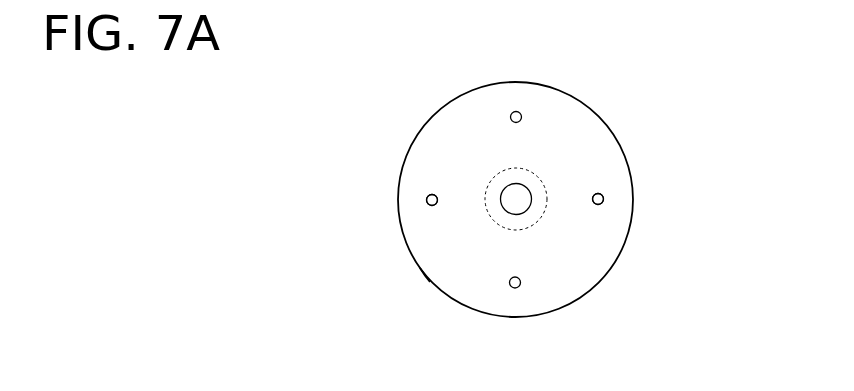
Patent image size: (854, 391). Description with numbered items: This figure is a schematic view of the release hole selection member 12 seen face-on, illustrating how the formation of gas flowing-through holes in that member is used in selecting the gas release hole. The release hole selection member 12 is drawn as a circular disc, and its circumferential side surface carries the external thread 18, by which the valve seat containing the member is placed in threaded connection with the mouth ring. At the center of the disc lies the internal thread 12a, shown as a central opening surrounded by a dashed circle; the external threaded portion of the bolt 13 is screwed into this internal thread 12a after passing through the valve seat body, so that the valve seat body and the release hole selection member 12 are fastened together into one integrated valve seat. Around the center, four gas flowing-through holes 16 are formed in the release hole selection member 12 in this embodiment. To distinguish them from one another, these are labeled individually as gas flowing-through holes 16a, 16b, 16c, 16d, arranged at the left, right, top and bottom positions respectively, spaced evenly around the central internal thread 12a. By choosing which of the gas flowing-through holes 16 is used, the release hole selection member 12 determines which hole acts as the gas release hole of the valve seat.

The release hole selection member 12 is at (637, 130).
The internal thread 12a is at (534, 214).
The bolt 13 is at (505, 185).
The gas flowing-through holes 16 is at (515, 200).
The gas flowing-through hole 16a is at (426, 200).
The gas flowing-through hole 16b is at (604, 199).
The gas flowing-through hole 16c is at (516, 111).
The gas flowing-through hole 16d is at (516, 288).
The external thread 18 is at (420, 268).